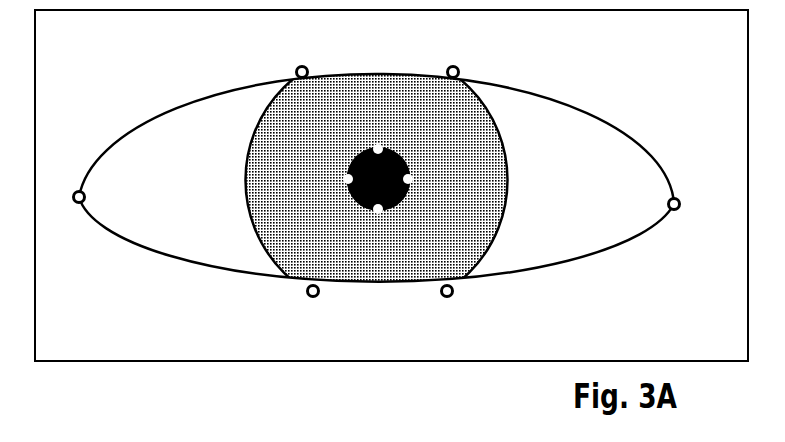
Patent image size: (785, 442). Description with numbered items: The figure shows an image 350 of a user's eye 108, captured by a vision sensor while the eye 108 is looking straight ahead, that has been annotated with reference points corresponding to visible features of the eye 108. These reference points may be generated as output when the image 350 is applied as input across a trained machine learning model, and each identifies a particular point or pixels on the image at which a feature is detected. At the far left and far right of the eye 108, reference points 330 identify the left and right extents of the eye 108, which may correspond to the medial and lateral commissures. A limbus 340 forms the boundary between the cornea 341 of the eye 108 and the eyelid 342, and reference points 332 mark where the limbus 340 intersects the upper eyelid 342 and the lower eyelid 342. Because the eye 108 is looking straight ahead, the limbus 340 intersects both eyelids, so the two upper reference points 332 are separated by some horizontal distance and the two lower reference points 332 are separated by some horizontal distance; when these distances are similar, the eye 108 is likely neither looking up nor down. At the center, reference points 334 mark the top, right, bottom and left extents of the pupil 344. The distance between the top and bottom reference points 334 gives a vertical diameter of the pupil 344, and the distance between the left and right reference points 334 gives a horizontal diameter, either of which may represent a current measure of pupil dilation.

The eye 108 is at (665, 106).
The image 350 is at (391, 185).
The reference points 330 is at (86, 197).
The reference points 332 is at (306, 67).
The eyelid 342 is at (566, 96).
The limbus 340 is at (262, 240).
The cornea 341 is at (353, 273).
The pupil 344 is at (356, 163).
The reference points 334 is at (414, 246).